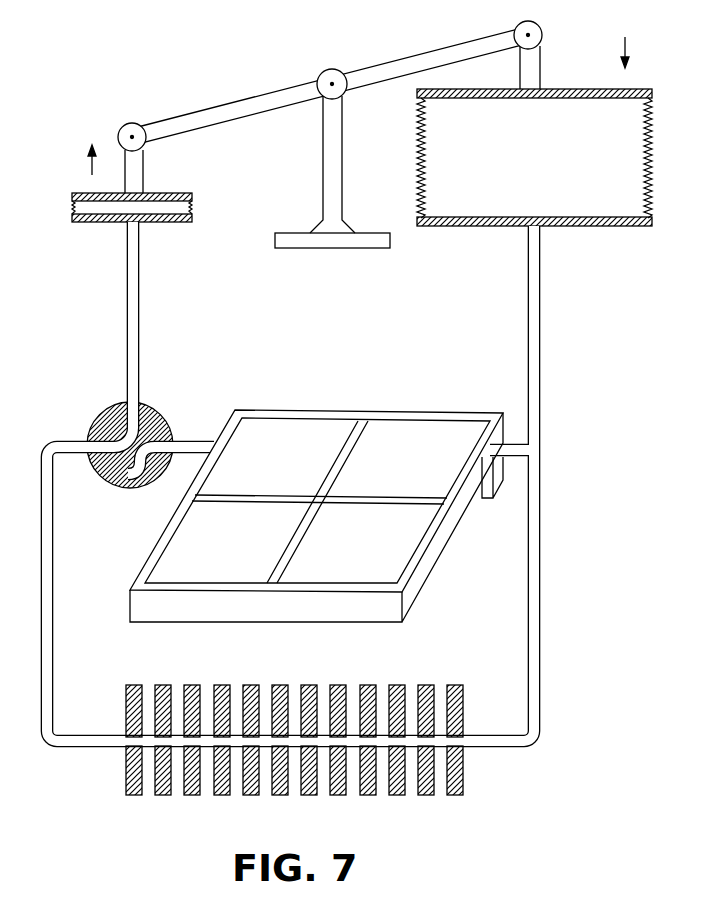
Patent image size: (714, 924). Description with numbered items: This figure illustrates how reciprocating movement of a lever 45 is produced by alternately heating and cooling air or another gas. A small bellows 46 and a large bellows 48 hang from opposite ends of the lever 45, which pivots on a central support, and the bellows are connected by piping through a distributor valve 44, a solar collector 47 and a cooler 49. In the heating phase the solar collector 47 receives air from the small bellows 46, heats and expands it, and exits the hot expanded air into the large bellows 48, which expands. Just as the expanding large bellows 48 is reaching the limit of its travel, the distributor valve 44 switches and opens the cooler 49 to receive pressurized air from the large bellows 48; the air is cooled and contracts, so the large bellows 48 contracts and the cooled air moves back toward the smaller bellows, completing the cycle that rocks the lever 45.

The distributor valve 44 is at (143, 403).
The lever 45 is at (253, 92).
The small bellows 46 is at (150, 193).
The solar collector 47 is at (392, 410).
The large bellows 48 is at (570, 89).
The cooler 49 is at (422, 687).